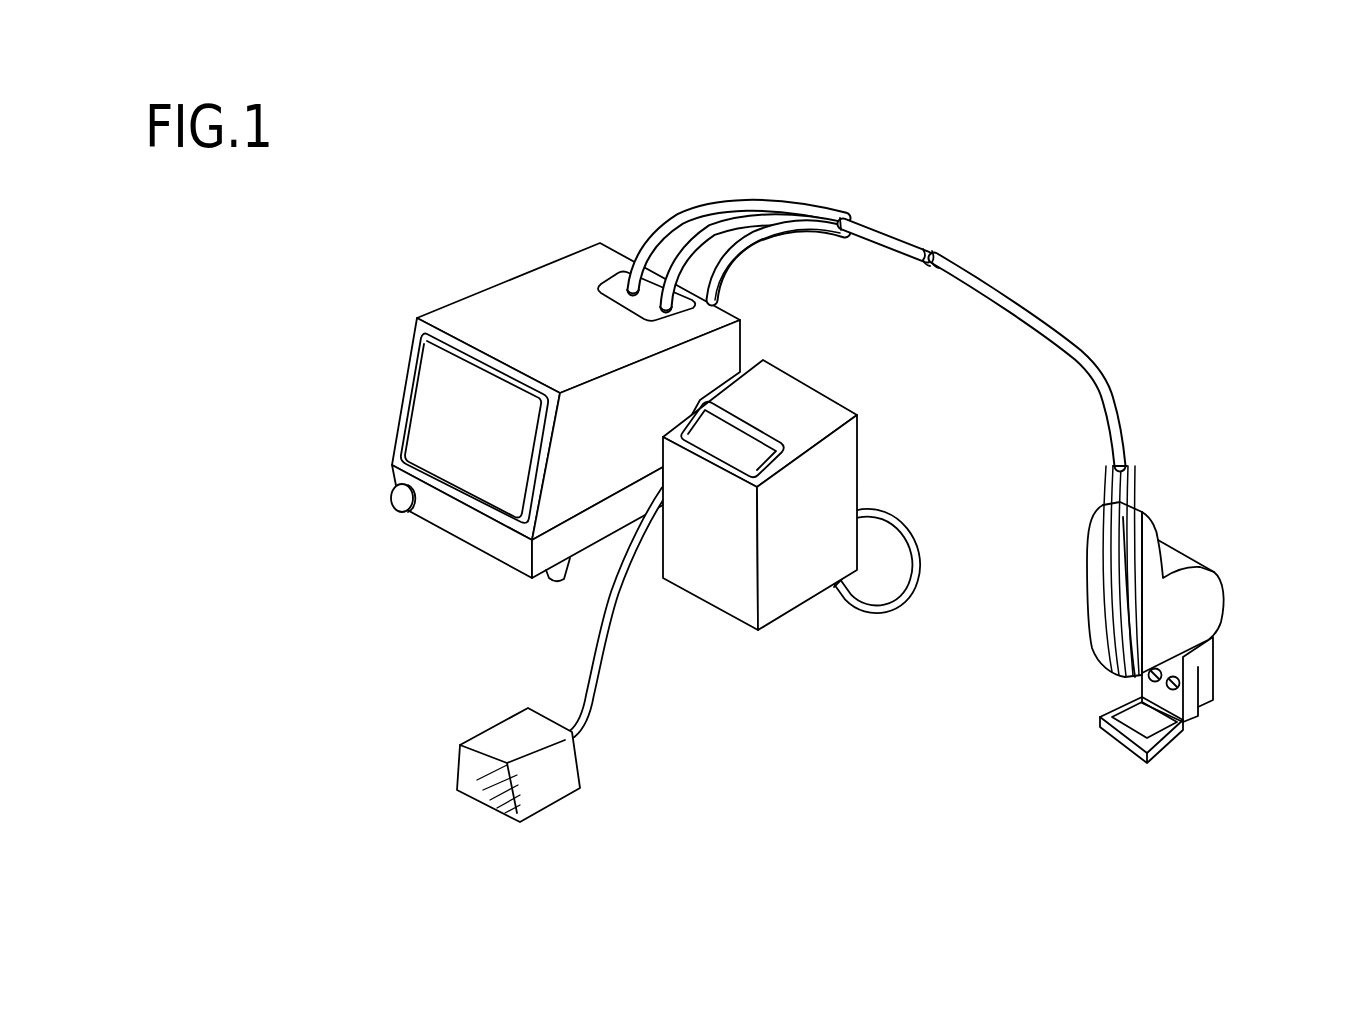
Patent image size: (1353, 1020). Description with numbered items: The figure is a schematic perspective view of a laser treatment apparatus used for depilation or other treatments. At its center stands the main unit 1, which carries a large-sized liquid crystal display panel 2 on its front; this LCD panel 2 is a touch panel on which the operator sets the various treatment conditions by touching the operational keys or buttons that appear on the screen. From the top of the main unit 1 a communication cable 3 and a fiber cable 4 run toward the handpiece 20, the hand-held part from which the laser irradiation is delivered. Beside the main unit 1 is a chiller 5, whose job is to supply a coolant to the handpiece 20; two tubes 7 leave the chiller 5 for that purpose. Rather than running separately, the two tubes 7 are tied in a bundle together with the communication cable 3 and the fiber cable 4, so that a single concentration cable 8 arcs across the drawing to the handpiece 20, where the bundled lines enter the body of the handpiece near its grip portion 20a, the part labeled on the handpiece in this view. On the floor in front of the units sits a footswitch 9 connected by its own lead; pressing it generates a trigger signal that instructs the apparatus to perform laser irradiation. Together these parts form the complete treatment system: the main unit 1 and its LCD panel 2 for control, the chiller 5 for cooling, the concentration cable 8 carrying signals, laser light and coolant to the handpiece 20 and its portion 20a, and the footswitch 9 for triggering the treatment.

The main unit 1 is at (512, 170).
The liquid crystal display panel 2 is at (428, 392).
The communication cable 3 is at (653, 228).
The fiber cable 4 is at (675, 240).
The chiller 5 is at (797, 390).
The tubes 7 is at (735, 257).
The concentration cable 8 is at (960, 260).
The footswitch 9 is at (512, 723).
The handpiece 20 is at (1195, 604).
The grip portion 20a is at (1222, 590).